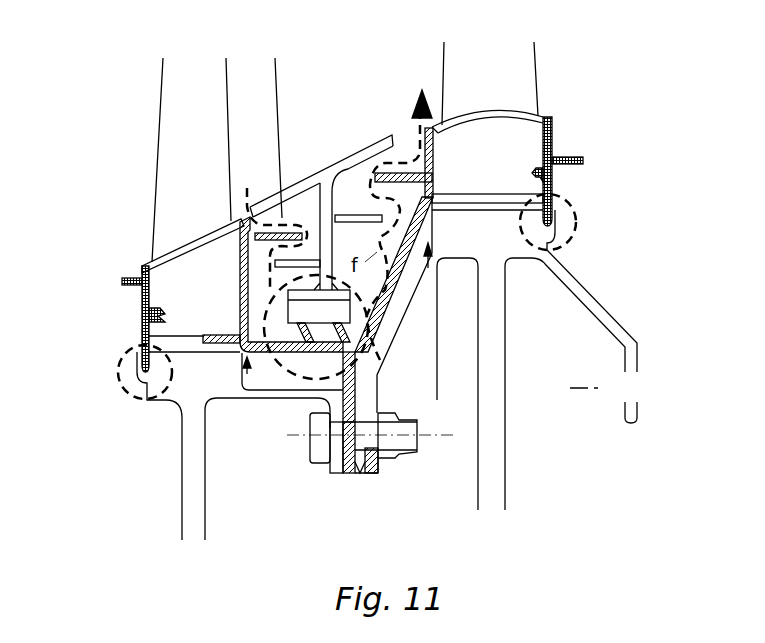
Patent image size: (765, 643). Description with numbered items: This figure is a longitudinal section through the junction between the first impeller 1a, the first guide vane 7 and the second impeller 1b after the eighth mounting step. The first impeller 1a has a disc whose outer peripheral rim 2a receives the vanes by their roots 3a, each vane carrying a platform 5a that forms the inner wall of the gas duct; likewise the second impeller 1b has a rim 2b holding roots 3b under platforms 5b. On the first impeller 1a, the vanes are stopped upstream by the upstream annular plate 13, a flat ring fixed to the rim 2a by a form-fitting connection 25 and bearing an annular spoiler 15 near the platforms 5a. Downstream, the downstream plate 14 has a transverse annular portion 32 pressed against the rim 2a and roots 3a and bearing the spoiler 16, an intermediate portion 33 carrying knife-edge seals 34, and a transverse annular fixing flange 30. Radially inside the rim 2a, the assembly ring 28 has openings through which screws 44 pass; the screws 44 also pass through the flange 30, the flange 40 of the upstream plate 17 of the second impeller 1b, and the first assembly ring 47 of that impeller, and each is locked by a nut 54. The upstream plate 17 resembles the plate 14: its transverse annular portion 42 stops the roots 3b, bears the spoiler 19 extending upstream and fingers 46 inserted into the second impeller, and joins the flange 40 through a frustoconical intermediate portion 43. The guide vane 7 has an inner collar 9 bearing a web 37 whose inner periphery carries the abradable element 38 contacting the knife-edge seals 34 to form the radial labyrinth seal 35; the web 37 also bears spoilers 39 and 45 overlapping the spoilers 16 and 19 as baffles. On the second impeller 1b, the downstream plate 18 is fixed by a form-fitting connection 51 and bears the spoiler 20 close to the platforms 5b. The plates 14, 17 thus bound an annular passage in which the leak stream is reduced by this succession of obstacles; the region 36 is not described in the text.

The first impeller 1a is at (139, 96).
The second impeller 1b is at (475, 70).
The outer peripheral rim 2a is at (176, 406).
The outer peripheral rim 2b is at (519, 240).
The root 3a is at (190, 275).
The root 3b is at (524, 146).
The platform 5a is at (200, 228).
The platform 5b is at (499, 117).
The first guide vane 7 is at (299, 83).
The inner collar 9 is at (272, 205).
The upstream annular plate 13 is at (128, 326).
The downstream annular plate 14 is at (246, 374).
The annular spoiler 15 is at (122, 281).
The annular spoiler 16 is at (238, 220).
The upstream plate 17 is at (440, 262).
The downstream plate 18 is at (570, 186).
The annular spoiler 19 is at (383, 170).
The annular spoiler 20 is at (578, 161).
The form-fitting connection 25 is at (122, 386).
The assembly ring 28 is at (338, 463).
The transverse annular fixing flange 30 is at (348, 474).
The transverse annular portion 32 is at (240, 297).
The intermediate portion 33 is at (274, 357).
The knife-edge seals 34 is at (240, 334).
The radial labyrinth sealing joint 35 is at (389, 368).
The gap 36 is at (213, 345).
The web 37 is at (312, 260).
The abradable element 38 is at (377, 327).
The annular spoiler 39 is at (312, 172).
The transverse annular flange 40 is at (359, 474).
The transverse annular portion 42 is at (434, 148).
The intermediate portion 43 is at (395, 305).
The screws 44 is at (317, 442).
The annular spoiler 45 is at (342, 166).
The fingers 46 is at (450, 203).
The first assembly ring 47 is at (381, 462).
The form-fitting connection 51 is at (578, 234).
The nut 54 is at (398, 458).